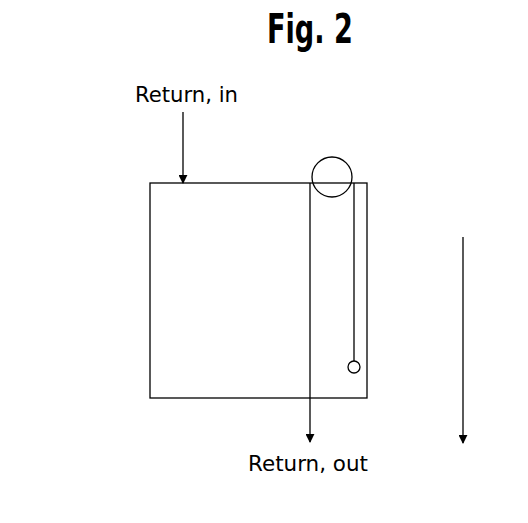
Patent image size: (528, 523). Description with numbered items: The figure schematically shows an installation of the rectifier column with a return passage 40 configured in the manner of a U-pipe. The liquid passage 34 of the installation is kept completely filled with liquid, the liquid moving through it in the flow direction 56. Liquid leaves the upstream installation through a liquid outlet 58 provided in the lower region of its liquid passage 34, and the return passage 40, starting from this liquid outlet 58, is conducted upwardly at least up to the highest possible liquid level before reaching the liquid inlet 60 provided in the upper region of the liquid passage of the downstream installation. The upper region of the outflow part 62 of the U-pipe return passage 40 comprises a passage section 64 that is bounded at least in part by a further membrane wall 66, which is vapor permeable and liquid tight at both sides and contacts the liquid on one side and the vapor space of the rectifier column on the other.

The liquid passage 34 is at (245, 296).
The return passage 40 is at (354, 263).
The flow direction 56 is at (463, 307).
The liquid outlet 58 is at (360, 364).
The liquid inlet 60 is at (185, 183).
The outflow part 62 is at (310, 330).
The passage section 64 is at (350, 174).
The further membrane wall 66 is at (336, 189).